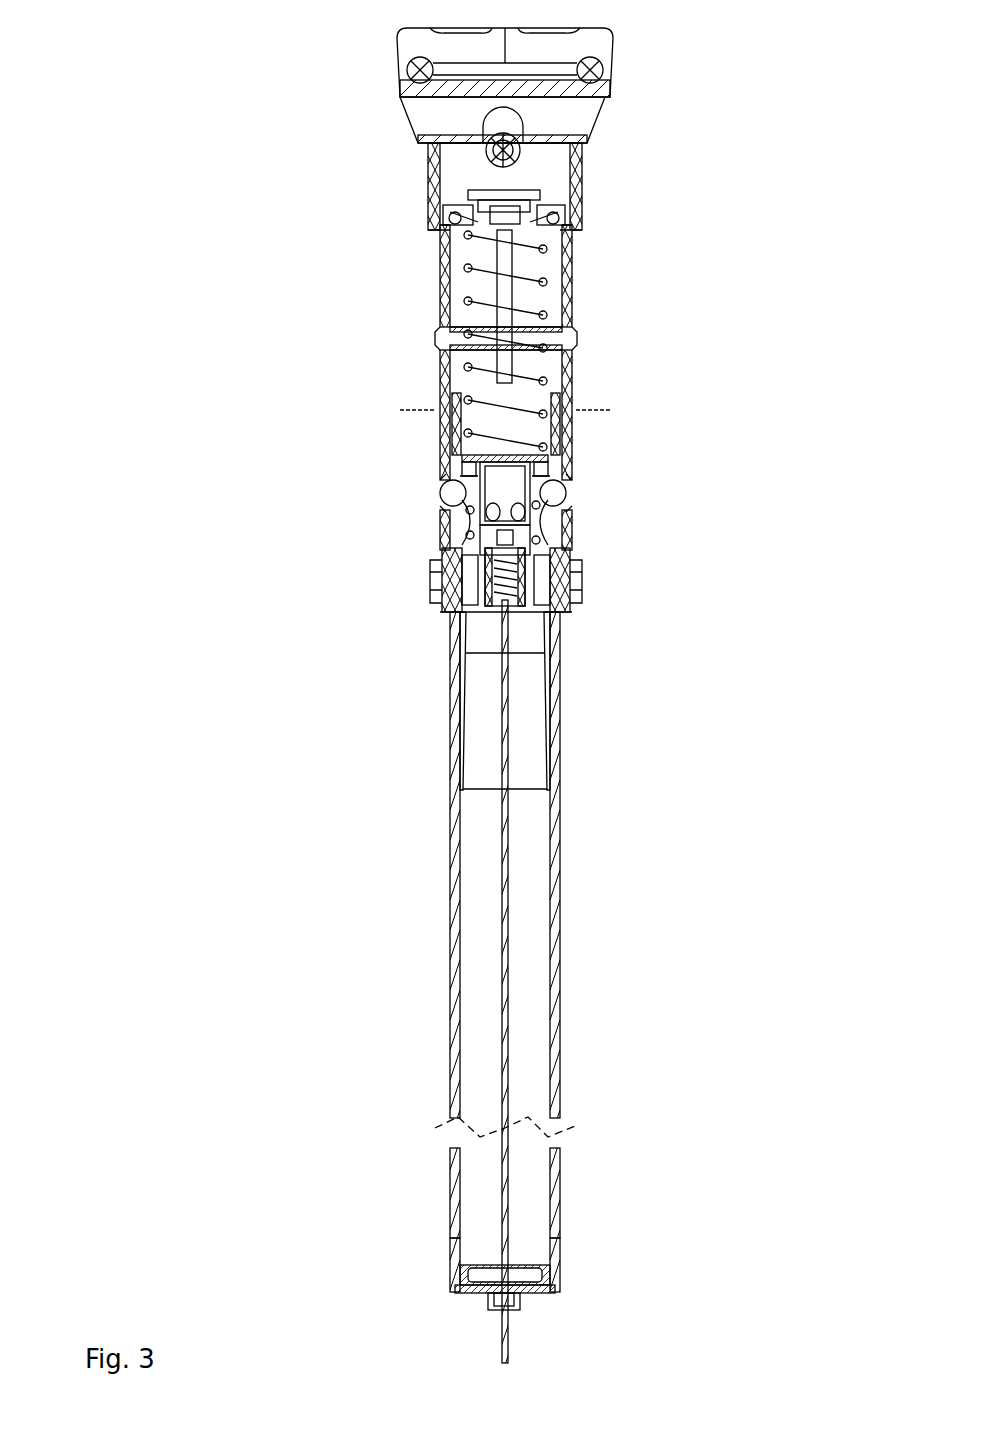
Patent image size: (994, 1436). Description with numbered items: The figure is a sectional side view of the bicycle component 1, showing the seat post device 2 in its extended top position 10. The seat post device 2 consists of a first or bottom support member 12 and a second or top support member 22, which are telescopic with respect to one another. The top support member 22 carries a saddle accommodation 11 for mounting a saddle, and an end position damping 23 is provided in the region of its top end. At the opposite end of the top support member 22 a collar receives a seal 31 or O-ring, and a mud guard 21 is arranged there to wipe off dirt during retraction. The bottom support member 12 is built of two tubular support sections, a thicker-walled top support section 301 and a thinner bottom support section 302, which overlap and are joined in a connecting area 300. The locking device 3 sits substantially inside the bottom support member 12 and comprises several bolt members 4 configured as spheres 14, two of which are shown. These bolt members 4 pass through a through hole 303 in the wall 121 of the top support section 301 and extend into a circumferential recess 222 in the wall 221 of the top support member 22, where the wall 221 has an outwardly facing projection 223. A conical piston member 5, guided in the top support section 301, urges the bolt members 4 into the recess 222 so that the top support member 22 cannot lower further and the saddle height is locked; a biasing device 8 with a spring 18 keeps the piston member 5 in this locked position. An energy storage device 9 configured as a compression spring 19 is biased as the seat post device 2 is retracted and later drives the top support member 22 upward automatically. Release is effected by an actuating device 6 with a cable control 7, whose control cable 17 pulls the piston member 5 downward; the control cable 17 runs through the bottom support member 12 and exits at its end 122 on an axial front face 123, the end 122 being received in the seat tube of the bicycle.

The bicycle component 1 is at (125, 32).
The seat post device 2 is at (152, 110).
The top position 10 is at (165, 192).
The saddle accommodation 11 is at (320, 92).
The end position damping 23 is at (445, 222).
The top support member 22 is at (435, 248).
The wall 221 is at (445, 298).
The recess 222 is at (437, 338).
The energy storage device 9 is at (545, 280).
The spring 19 is at (540, 312).
The locking device 3 is at (688, 380).
The through hole 303 is at (455, 480).
The projection 223 is at (438, 497).
The top support section 301 is at (455, 550).
The wall 121 is at (433, 578).
The seal 31 is at (430, 595).
The connecting area 300 is at (448, 680).
The piston member 5 is at (570, 478).
The bolt members 4 is at (568, 488).
The spheres 14 is at (570, 500).
The biasing device 8 is at (575, 545).
The spring 18 is at (575, 555).
The mud guard 21 is at (575, 615).
The actuating device 6 is at (522, 668).
The bottom support section 302 is at (452, 830).
The bottom support member 12 is at (450, 880).
The end 122 is at (408, 1270).
The axial front face 123 is at (462, 1295).
The control cable 17 is at (497, 1343).
The cable control 7 is at (515, 1325).